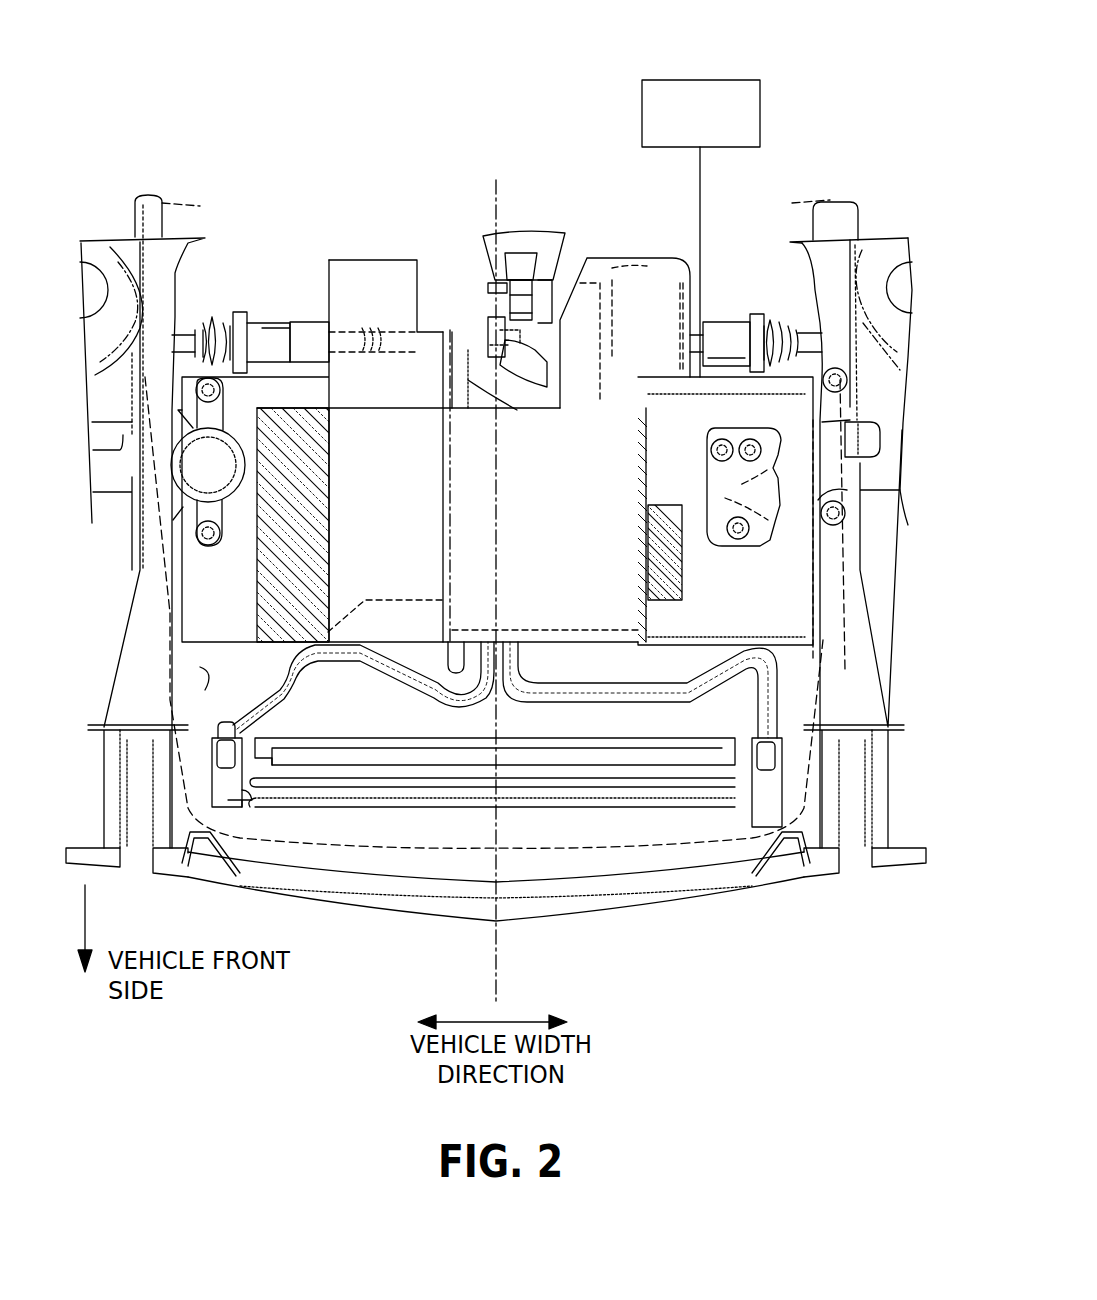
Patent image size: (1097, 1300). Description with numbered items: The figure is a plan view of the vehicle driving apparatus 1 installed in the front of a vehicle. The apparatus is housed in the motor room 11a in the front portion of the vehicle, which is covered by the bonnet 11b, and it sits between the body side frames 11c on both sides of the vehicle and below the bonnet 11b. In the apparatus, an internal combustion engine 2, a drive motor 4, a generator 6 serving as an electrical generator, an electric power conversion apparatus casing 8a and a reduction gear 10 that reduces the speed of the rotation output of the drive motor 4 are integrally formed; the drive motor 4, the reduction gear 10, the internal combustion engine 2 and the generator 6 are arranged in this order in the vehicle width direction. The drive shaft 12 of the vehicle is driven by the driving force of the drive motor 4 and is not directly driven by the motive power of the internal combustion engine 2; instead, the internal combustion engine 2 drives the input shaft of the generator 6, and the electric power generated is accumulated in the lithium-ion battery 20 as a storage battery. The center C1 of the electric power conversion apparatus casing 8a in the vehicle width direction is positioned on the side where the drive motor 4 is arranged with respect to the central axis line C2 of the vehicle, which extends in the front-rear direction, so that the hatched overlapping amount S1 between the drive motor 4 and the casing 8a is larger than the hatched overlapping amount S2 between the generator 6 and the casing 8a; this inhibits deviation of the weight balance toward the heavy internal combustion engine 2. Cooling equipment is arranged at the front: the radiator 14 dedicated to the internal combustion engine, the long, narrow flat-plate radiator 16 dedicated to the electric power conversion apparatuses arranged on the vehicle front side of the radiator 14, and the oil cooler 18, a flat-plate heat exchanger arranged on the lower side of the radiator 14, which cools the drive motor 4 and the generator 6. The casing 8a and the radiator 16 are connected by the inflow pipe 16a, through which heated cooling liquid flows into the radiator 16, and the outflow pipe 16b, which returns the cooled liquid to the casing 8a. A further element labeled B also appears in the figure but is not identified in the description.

The vehicle driving apparatus 1 is at (566, 180).
The internal combustion engine 2 is at (600, 257).
The drive motor 4 is at (190, 562).
The generator 6 is at (795, 560).
The electric power conversion apparatus casing 8a is at (400, 437).
The reduction gear 10 is at (349, 278).
The motor room 11a is at (200, 690).
The bonnet 11b is at (137, 240).
The body side frames 11c is at (132, 812).
The drive shaft 12 is at (732, 333).
The radiator dedicated to the internal combustion engine 14 is at (667, 757).
The radiator dedicated to the electric power conversion apparatuses 16 is at (597, 790).
The inflow pipe 16a is at (418, 686).
The outflow pipe 16b is at (546, 690).
The oil cooler 18 is at (710, 800).
The lithium-ion battery 20 is at (738, 80).
The bumper reinforcement B is at (352, 912).
The center of the electric power conversion apparatus casing C1 is at (452, 330).
The central axis line C2 is at (494, 191).
The hatched part S1 is at (277, 433).
The hatched part S2 is at (670, 575).